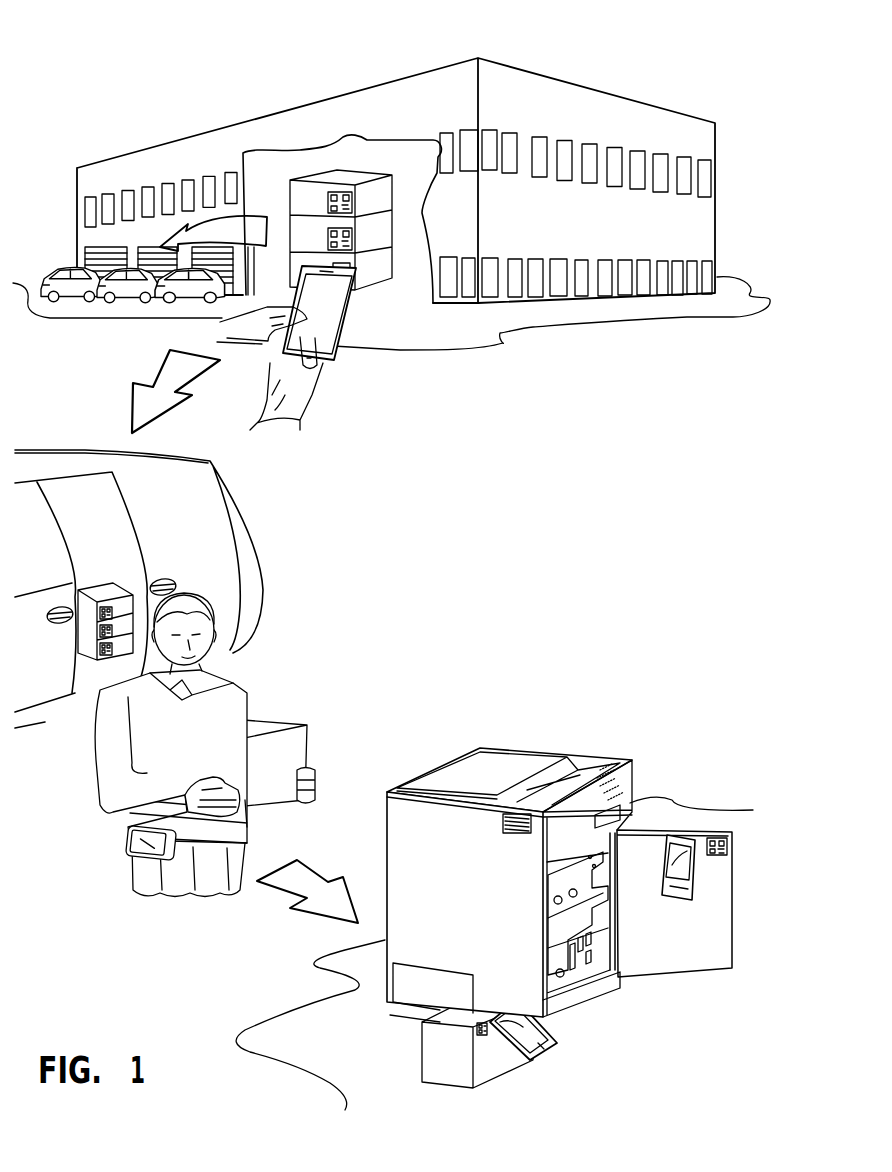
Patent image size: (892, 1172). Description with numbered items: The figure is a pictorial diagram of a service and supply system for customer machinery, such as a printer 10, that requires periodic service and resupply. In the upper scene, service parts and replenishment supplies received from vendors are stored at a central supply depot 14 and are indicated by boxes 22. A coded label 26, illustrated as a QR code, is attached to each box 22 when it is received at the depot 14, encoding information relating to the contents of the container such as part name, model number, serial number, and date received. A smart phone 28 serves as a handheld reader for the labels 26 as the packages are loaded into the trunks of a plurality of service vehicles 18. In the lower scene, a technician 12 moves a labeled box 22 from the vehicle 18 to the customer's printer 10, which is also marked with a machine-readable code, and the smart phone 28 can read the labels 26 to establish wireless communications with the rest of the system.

The printer 10 is at (372, 810).
The technician 12 is at (233, 683).
The central supply depot 14 is at (547, 87).
The vehicle 18 is at (113, 302).
The box 22 is at (337, 172).
The coded label 26 is at (352, 200).
The smart phone 28 is at (320, 320).